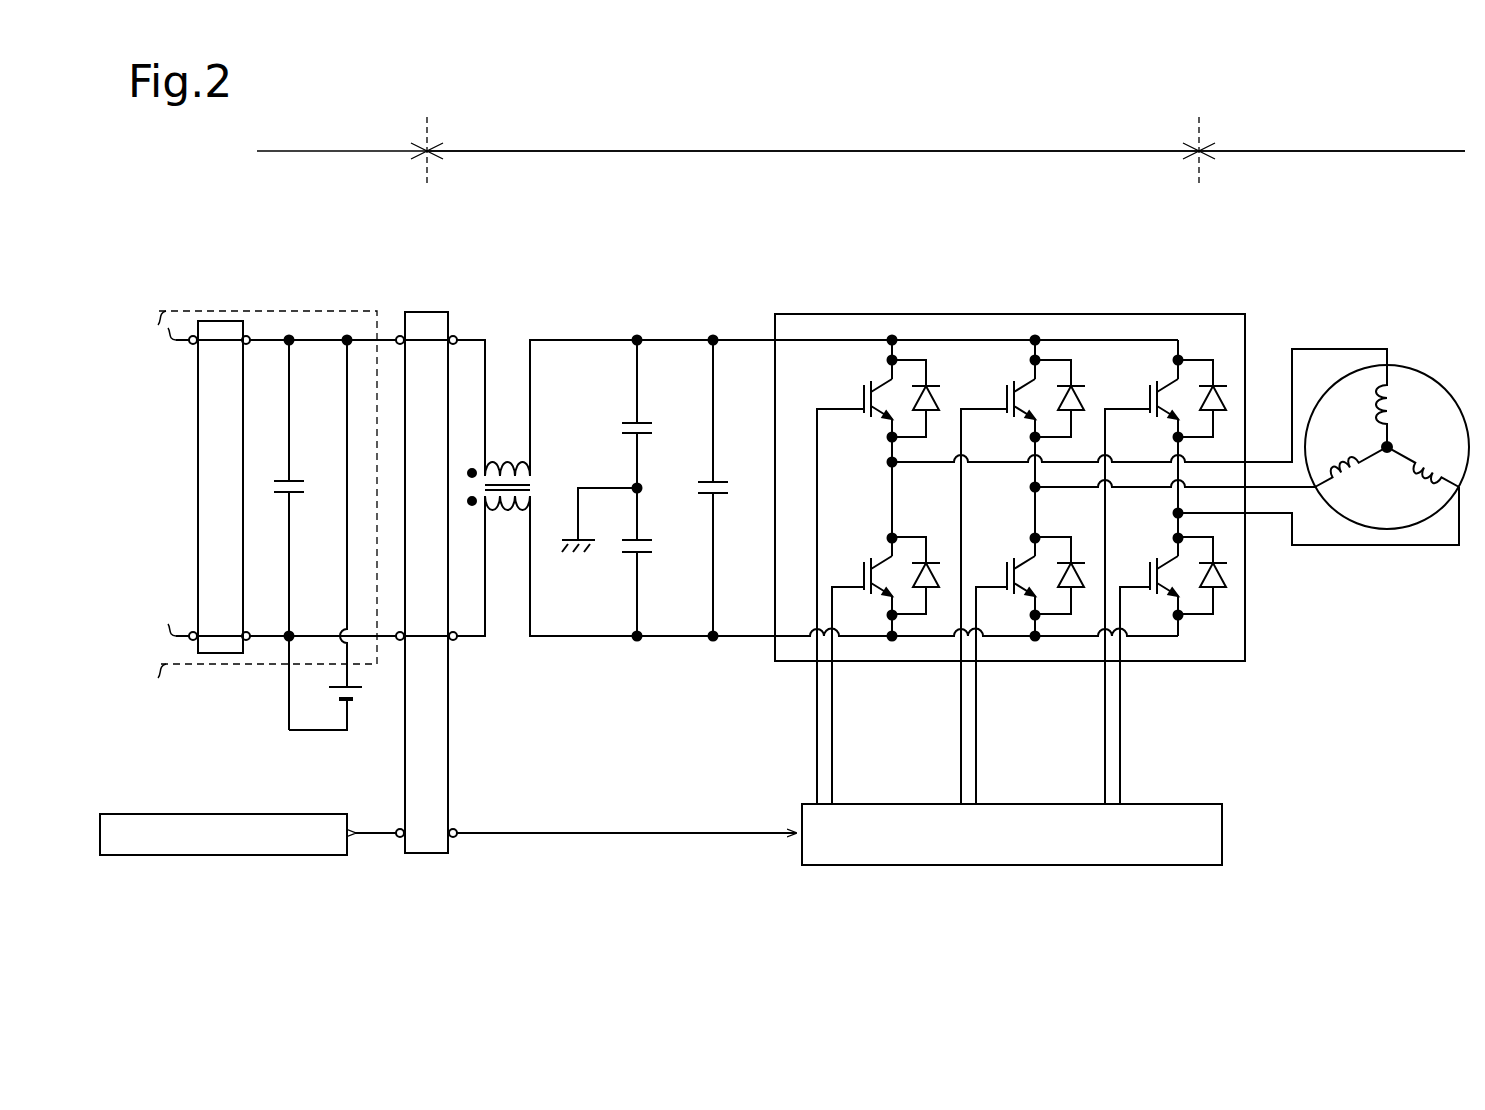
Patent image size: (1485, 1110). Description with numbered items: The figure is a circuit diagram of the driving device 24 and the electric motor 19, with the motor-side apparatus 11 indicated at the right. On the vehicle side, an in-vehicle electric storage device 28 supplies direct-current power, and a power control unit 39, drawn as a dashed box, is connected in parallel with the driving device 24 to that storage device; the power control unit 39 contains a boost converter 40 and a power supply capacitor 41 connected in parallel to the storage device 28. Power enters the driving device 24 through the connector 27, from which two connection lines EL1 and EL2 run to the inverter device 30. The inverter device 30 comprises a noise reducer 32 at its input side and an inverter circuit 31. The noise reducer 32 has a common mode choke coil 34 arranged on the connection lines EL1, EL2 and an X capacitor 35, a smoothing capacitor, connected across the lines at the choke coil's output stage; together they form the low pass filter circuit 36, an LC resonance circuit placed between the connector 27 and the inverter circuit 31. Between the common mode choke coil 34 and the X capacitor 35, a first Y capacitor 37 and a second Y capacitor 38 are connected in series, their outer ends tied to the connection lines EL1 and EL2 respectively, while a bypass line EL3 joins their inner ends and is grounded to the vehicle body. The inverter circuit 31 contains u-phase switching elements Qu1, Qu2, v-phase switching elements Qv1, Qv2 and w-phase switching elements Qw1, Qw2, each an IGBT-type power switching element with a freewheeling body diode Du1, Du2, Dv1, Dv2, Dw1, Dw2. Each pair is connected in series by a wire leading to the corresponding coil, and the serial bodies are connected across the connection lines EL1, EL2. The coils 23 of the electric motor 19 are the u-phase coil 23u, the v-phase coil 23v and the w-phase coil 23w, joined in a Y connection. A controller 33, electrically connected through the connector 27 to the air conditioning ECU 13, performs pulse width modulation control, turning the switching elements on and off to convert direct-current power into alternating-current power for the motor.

The motor-driven compressor 11 is at (1375, 232).
The air conditioning ECU 13 is at (308, 817).
The electric motor 19 is at (1332, 137).
The coils 23 is at (1399, 364).
The u-phase coil 23u is at (1399, 403).
The v-phase coil 23v is at (1350, 470).
The w-phase coil 23w is at (1427, 470).
The driving device 24 is at (813, 137).
The connector 27 is at (401, 312).
The in-vehicle electric storage device 28 is at (365, 681).
The inverter device 30 is at (1139, 238).
The inverter circuit 31 is at (1010, 314).
The noise reducer 32 is at (751, 320).
The controller 33 is at (1198, 803).
The common mode choke coil 34 is at (508, 446).
The X capacitor 35 is at (718, 482).
The low pass filter circuit 36 is at (629, 246).
The first Y capacitor 37 is at (641, 424).
The second Y capacitor 38 is at (641, 541).
The power control unit 39 is at (316, 306).
The boost converter 40 is at (222, 321).
The power supply capacitor 41 is at (297, 493).
The u-phase switching element Qu1 is at (855, 397).
The u-phase switching element Qu2 is at (856, 574).
The v-phase switching element Qv1 is at (998, 397).
The v-phase switching element Qv2 is at (999, 574).
The w-phase switching element Qw1 is at (1141, 397).
The w-phase switching element Qw2 is at (1142, 574).
The freewheeling diode Du1 is at (931, 384).
The freewheeling diode Du2 is at (928, 564).
The freewheeling diode Dv1 is at (1076, 384).
The freewheeling diode Dv2 is at (1072, 564).
The freewheeling diode Dw1 is at (1218, 384).
The freewheeling diode Dw2 is at (1227, 577).
The first connection line EL1 is at (676, 340).
The second connection line EL2 is at (672, 640).
The bypass line EL3 is at (636, 461).